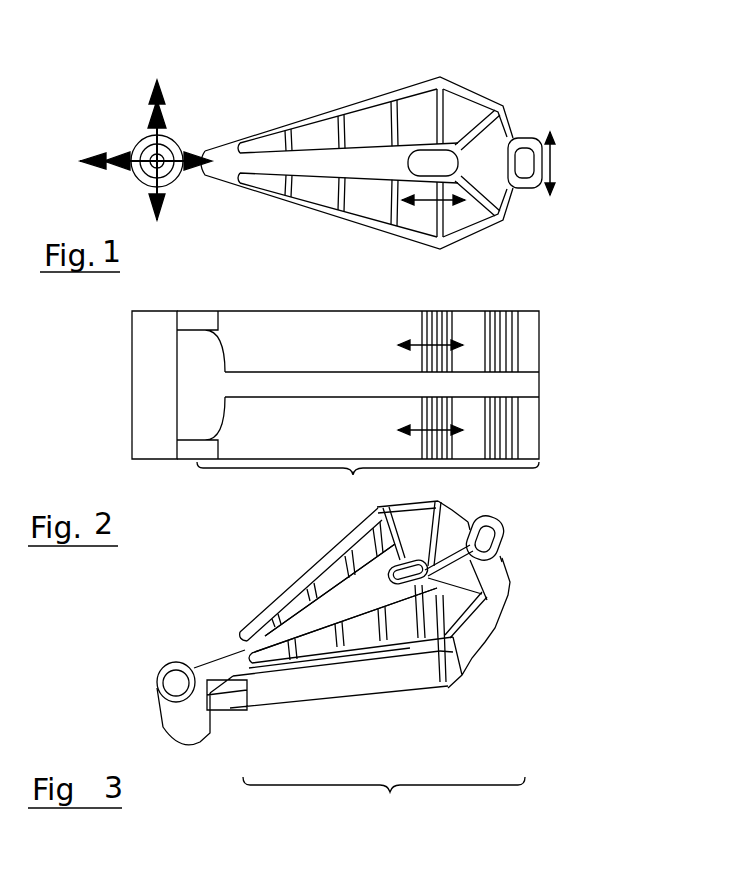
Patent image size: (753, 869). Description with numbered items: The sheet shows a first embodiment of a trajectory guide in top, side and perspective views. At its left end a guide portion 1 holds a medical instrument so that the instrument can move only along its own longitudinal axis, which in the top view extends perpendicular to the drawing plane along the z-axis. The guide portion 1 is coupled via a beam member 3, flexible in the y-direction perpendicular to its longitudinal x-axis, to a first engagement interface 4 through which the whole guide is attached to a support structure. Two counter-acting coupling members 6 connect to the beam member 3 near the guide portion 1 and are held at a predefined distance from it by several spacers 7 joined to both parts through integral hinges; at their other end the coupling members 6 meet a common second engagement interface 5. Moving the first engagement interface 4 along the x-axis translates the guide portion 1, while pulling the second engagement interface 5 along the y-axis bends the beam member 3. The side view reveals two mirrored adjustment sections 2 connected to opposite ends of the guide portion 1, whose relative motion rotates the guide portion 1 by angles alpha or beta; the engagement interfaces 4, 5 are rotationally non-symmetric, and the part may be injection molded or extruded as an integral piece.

In FIG. 1, the guide portion 1 is at (140, 150).
In FIG. 2, the guide portion 1 is at (150, 392).
In FIG. 3, the guide portion 1 is at (188, 736).
In FIG. 1, the adjustment section 2 is at (392, 145).
In FIG. 2, the adjustment section 2 is at (358, 383).
In FIG. 3, the adjustment section 2 is at (392, 663).
In FIG. 1, the beam member 3 is at (355, 165).
In FIG. 3, the beam member 3 is at (363, 643).
In FIG. 1, the first engagement interface 4 is at (438, 160).
In FIG. 3, the first engagement interface 4 is at (398, 575).
In FIG. 1, the second engagement interface 5 is at (530, 160).
In FIG. 3, the second engagement interface 5 is at (488, 540).
In FIG. 1, the coupling member 6 is at (383, 103).
In FIG. 2, the coupling member 6 is at (298, 435).
In FIG. 3, the coupling member 6 is at (345, 585).
In FIG. 1, the spacer 7 is at (441, 118).
In FIG. 3, the spacer 7 is at (273, 622).